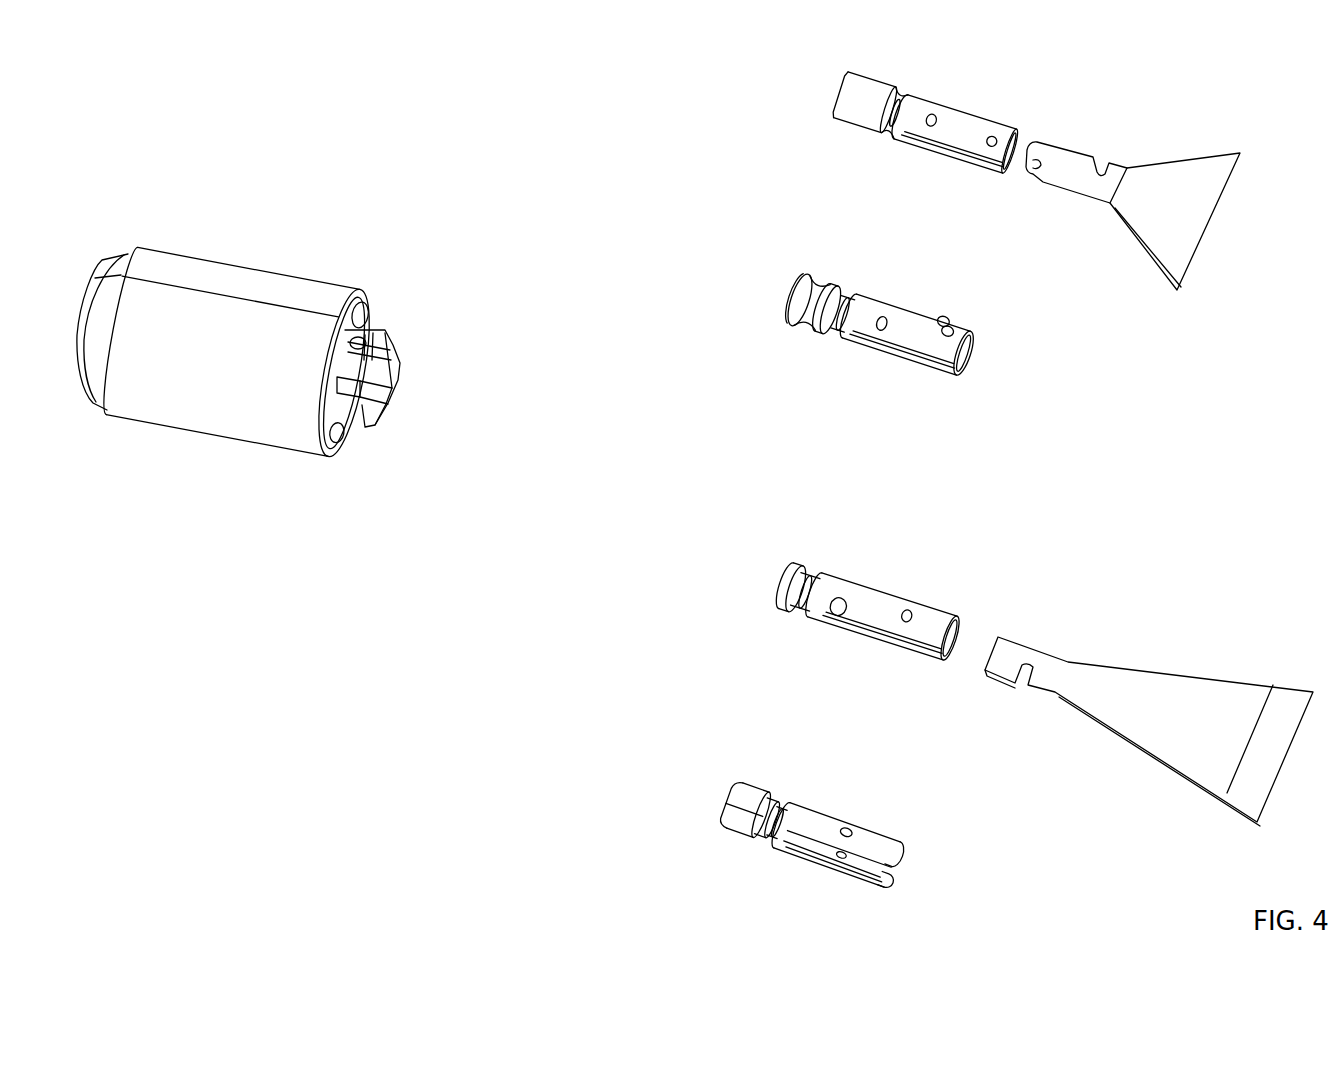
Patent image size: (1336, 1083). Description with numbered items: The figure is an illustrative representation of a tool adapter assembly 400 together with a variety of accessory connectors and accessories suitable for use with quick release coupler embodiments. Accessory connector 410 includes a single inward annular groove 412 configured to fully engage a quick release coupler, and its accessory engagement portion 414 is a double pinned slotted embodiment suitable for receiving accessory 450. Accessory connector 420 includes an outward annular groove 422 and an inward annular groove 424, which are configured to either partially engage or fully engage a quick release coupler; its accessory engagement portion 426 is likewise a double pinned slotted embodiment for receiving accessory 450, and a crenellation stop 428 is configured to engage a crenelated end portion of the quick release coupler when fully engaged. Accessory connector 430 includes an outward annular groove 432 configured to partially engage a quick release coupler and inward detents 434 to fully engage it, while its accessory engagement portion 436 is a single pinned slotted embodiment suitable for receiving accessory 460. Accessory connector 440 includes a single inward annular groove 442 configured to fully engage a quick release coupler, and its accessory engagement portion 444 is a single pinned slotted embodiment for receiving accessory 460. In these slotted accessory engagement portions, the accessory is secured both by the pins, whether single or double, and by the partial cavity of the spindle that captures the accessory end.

The tool adapter assembly 400 is at (327, 216).
The accessory connector 410 is at (823, 48).
The inward annular groove 412 is at (905, 100).
The accessory engagement portion 414 is at (1008, 173).
The accessory connector 420 is at (770, 253).
The outward annular groove 422 is at (823, 282).
The inward annular groove 424 is at (843, 333).
The accessory engagement portion 426 is at (957, 383).
The crenellation stop 428 is at (960, 325).
The accessory connector 430 is at (767, 545).
The outward annular groove 432 is at (810, 568).
The inward detents 434 is at (830, 612).
The accessory engagement portion 436 is at (947, 667).
The accessory connector 440 is at (711, 766).
The inward annular groove 442 is at (782, 805).
The accessory engagement portion 444 is at (882, 897).
The accessory 450 is at (1215, 185).
The accessory 460 is at (1205, 682).